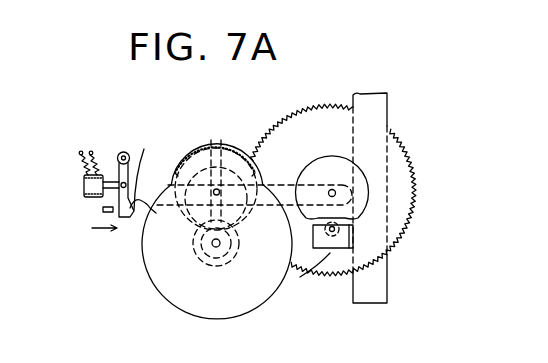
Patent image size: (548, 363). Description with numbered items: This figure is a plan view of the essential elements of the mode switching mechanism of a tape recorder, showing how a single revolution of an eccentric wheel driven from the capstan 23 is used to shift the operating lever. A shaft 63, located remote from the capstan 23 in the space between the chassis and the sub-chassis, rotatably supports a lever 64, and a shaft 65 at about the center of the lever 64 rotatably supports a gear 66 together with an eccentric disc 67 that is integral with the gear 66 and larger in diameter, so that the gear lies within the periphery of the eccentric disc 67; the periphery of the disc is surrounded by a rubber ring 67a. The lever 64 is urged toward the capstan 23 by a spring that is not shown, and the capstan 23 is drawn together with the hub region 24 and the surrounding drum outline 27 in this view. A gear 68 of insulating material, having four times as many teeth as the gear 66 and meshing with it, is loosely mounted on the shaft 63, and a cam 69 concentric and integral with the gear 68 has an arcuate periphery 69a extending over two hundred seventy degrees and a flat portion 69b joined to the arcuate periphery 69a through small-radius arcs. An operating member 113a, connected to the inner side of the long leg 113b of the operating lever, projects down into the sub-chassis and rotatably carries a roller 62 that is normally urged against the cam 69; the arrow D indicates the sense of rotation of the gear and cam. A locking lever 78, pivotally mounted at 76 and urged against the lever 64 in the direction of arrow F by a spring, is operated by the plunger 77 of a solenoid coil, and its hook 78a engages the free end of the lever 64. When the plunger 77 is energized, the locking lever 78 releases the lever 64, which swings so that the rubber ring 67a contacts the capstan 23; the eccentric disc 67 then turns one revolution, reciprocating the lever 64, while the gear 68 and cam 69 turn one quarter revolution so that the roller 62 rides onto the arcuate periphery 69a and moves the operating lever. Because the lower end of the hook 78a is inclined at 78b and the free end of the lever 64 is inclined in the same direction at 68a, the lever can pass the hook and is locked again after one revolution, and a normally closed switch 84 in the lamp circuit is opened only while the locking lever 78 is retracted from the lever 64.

The capstan 23 is at (216, 247).
The hub bearing 24 is at (192, 253).
The drum 27 is at (167, 303).
The roller 62 is at (335, 220).
The shaft 63 is at (340, 173).
The lever 64 is at (229, 196).
The shaft 65 is at (216, 156).
The gear 66 is at (196, 136).
The eccentric disc 67 is at (222, 160).
The rubber ring 67a is at (212, 150).
The gear 68 is at (413, 183).
The inclined free end of lever 68a is at (147, 167).
The cam 69 is at (318, 170).
The arcuate periphery 69a is at (358, 168).
The flat portion 69b is at (355, 223).
The pivot 76 is at (121, 152).
The plunger 77 is at (84, 187).
The locking lever 78 is at (118, 172).
The hook 78a is at (159, 220).
The inclined lower end of hook 78b is at (135, 212).
The normally closed switch 84 is at (102, 209).
The operating member 113a is at (315, 280).
The long leg 113b is at (389, 293).
The direction of rotation D is at (307, 101).
The direction of arrow F is at (97, 230).